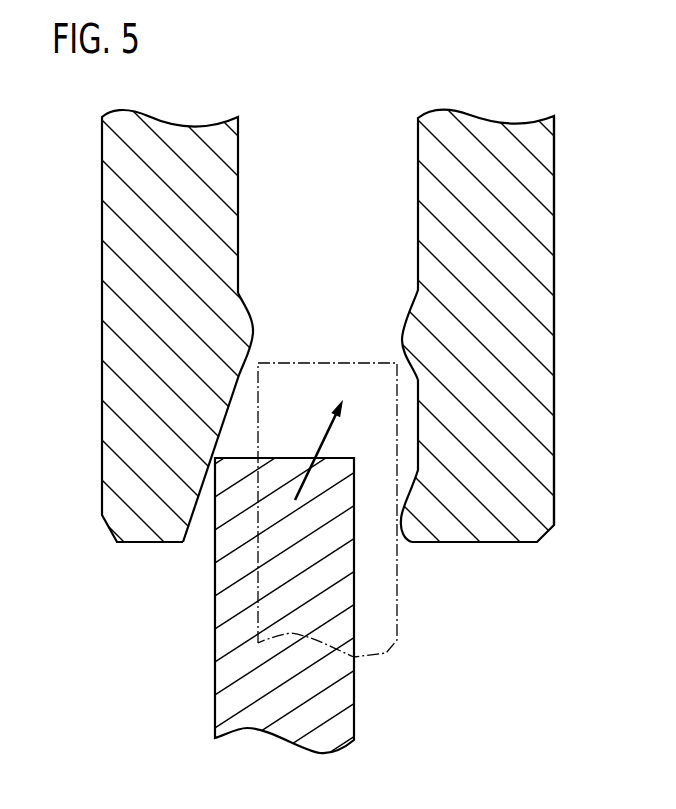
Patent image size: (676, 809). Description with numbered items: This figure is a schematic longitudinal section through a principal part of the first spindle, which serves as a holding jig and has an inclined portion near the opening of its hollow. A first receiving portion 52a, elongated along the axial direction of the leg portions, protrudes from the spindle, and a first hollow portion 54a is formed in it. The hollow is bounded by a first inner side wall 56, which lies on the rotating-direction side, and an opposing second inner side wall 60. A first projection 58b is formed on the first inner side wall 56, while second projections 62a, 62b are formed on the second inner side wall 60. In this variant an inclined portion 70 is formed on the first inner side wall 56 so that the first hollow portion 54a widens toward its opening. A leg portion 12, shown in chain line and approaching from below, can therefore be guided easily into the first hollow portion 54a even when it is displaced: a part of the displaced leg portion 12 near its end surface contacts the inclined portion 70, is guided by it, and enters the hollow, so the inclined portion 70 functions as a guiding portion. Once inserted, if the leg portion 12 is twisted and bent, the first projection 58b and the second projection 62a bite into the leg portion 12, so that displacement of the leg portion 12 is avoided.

The leg portion 12 is at (390, 627).
The first receiving portion 52a is at (557, 190).
The first hollow portion 54a is at (291, 153).
The first inner side wall 56 is at (238, 208).
The first projection 58b is at (253, 335).
The second inner side wall 60 is at (418, 147).
The second projection 62a is at (402, 528).
The second projection 62b is at (402, 335).
The inclined portion 70 is at (187, 522).